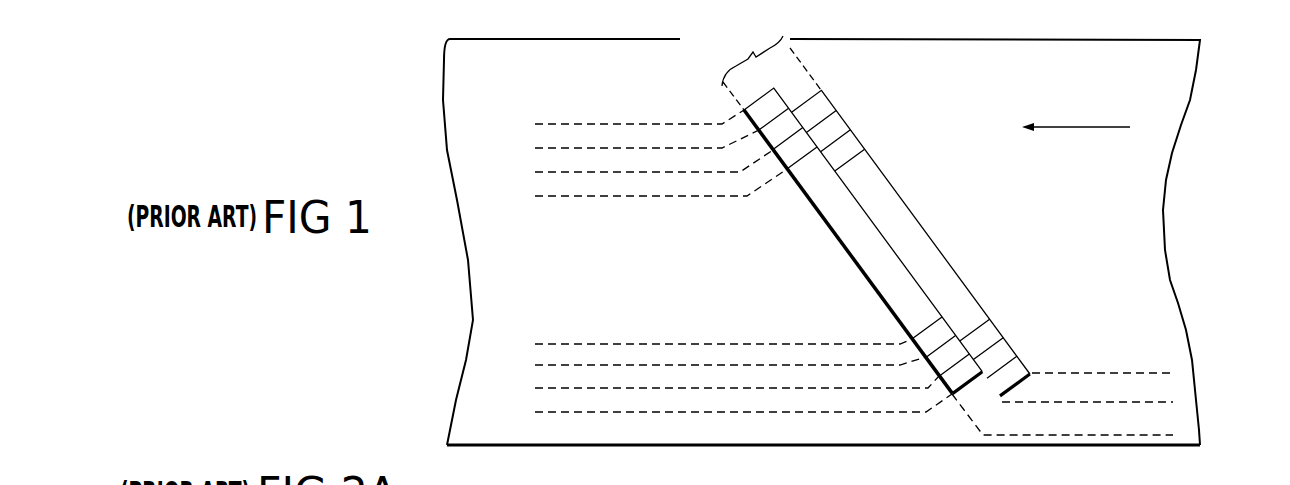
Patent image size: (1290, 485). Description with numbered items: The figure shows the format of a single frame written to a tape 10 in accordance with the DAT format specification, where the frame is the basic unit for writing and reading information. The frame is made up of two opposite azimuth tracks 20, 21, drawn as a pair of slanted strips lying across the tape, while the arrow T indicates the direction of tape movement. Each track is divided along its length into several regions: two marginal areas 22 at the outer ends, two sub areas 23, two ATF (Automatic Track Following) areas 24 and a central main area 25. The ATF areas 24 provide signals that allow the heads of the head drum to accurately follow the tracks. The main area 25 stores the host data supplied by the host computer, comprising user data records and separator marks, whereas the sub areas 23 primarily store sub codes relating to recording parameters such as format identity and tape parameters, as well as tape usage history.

The tape 10 is at (1157, 205).
The arrow indicating direction of tape movement T is at (1063, 127).
The track 20 is at (857, 202).
The track 21 is at (926, 228).
The marginal area 22 is at (771, 103).
The sub area 23 is at (783, 121).
The ATF area 24 is at (797, 145).
The main area 25 is at (840, 215).